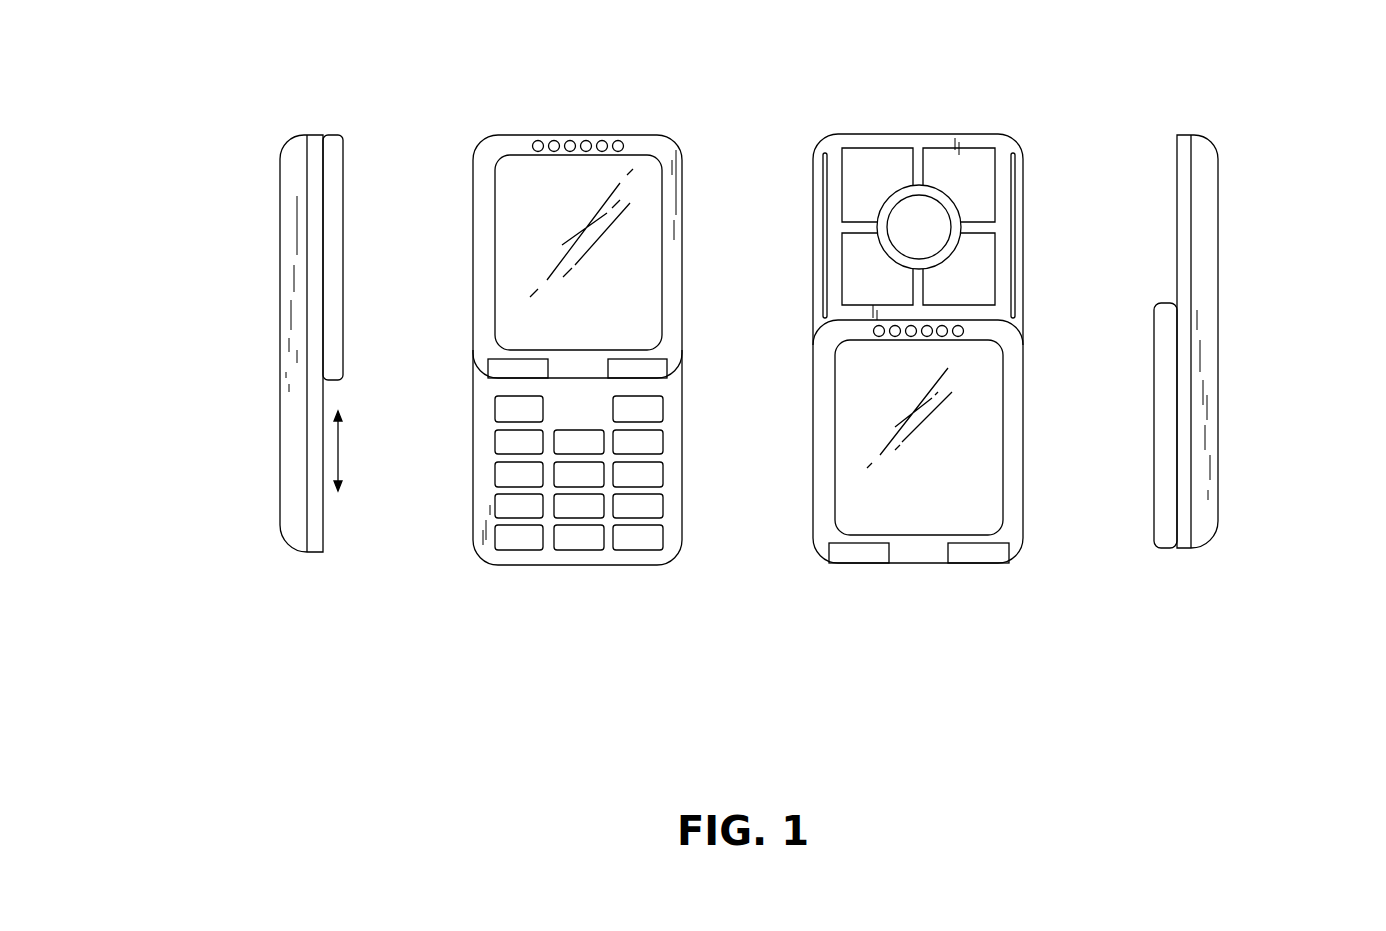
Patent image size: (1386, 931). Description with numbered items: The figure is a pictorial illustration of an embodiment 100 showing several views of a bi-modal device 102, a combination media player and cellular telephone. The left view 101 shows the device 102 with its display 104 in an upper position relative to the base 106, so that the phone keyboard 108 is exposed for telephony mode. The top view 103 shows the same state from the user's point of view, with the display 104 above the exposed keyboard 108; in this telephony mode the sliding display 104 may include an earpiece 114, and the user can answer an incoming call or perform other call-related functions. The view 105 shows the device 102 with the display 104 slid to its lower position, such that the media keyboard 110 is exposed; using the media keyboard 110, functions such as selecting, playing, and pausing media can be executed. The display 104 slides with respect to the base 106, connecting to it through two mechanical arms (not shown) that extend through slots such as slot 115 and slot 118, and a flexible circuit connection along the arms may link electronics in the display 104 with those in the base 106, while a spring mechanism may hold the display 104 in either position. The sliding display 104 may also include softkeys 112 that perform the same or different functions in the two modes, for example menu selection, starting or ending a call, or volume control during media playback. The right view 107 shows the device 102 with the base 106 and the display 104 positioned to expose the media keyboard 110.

The embodiment showing several views of a bi-modal device 100 is at (1051, 675).
The left view 101 is at (280, 488).
The device 102 is at (1177, 285).
The top view 103 is at (642, 565).
The display 104 is at (1154, 428).
The view 105 is at (837, 133).
The base 106 is at (1262, 248).
The right view 107 is at (1217, 537).
The keyboard 108 is at (495, 500).
The media keyboard 110 is at (880, 153).
The softkeys 112 is at (877, 560).
The earpiece 114 is at (565, 142).
The slot 115 is at (823, 245).
The slot 118 is at (1013, 242).